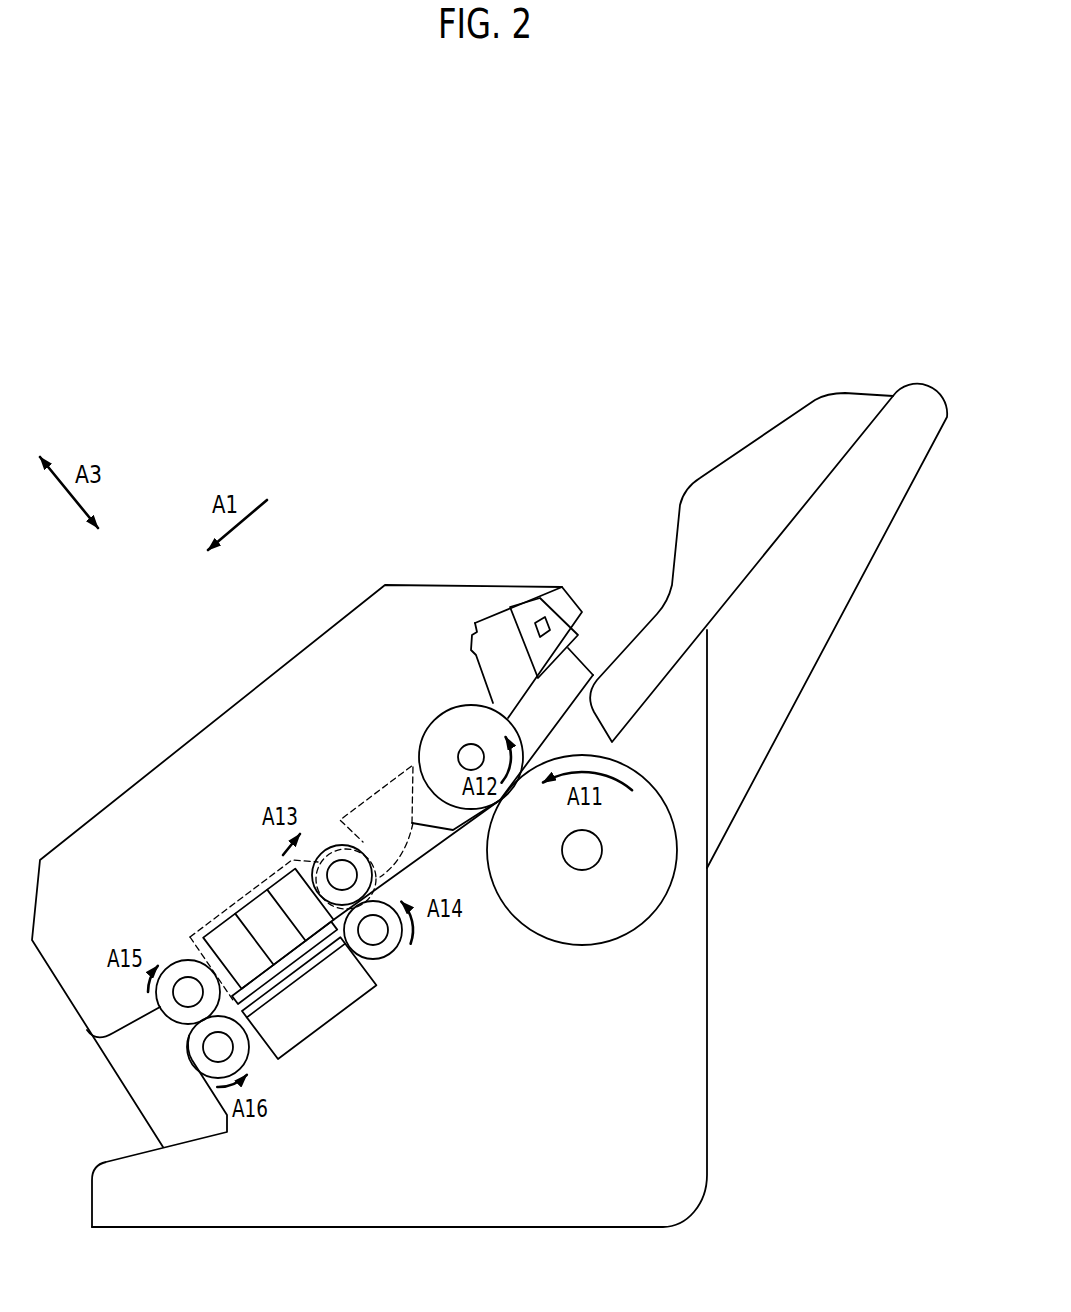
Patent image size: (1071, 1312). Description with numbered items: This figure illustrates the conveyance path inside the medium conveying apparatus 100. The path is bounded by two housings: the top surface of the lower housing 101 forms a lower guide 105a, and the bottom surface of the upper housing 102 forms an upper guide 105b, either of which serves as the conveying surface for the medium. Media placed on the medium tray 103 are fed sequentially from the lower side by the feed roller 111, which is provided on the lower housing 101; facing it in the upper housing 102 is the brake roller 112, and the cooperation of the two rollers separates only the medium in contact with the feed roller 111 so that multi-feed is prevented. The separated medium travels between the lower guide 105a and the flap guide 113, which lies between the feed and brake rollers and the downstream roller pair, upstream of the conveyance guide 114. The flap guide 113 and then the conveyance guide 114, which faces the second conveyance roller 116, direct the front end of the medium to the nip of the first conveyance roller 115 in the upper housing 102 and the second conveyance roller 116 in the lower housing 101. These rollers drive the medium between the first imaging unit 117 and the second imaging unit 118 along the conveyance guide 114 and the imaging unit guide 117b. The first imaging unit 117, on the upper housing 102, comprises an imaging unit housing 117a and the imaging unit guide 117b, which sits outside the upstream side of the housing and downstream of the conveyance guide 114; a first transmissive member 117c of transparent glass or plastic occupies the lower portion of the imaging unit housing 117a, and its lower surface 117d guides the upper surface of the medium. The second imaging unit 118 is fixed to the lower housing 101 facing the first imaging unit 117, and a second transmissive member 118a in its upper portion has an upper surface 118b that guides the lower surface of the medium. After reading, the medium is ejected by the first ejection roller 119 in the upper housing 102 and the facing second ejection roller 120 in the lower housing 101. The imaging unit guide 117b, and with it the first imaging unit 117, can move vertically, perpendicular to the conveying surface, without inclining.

The medium conveying apparatus 100 is at (250, 211).
The lower housing 101 is at (712, 1140).
The upper housing 102 is at (332, 645).
The medium tray 103 is at (832, 630).
The lower guide 105a is at (467, 836).
The upper guide 105b is at (140, 1018).
The feed roller 111 is at (631, 934).
The brake roller 112 is at (430, 722).
The flap guide 113 is at (380, 790).
The conveyance guide 114 is at (341, 845).
The first conveyance roller 115 is at (298, 858).
The second conveyance roller 116 is at (388, 955).
The first imaging unit 117 is at (232, 918).
The imaging unit housing 117a is at (212, 948).
The imaging unit guide 117b is at (280, 890).
The first transmissive member 117c is at (238, 945).
The lower surface 117d is at (262, 932).
The second imaging unit 118 is at (355, 1005).
The second transmissive member 118a is at (312, 1032).
The upper surface 118b is at (338, 1012).
The first ejection roller 119 is at (168, 967).
The second ejection roller 120 is at (256, 1060).